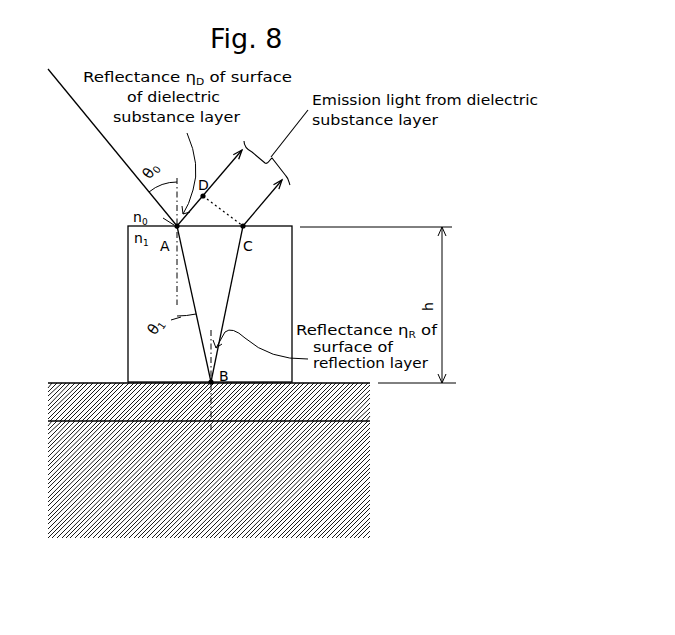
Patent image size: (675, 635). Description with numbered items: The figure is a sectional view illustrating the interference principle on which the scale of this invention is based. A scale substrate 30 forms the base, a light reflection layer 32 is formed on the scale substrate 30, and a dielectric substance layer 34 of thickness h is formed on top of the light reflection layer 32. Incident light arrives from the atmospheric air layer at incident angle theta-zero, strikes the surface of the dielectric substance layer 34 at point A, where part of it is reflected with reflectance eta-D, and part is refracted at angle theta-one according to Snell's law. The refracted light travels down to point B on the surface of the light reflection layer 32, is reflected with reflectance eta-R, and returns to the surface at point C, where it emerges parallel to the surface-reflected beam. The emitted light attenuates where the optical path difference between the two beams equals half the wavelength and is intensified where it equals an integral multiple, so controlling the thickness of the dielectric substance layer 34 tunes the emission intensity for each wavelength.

The scale substrate 30 is at (298, 522).
The light reflection layer 32 is at (323, 405).
The dielectric substance layer 34 is at (282, 313).